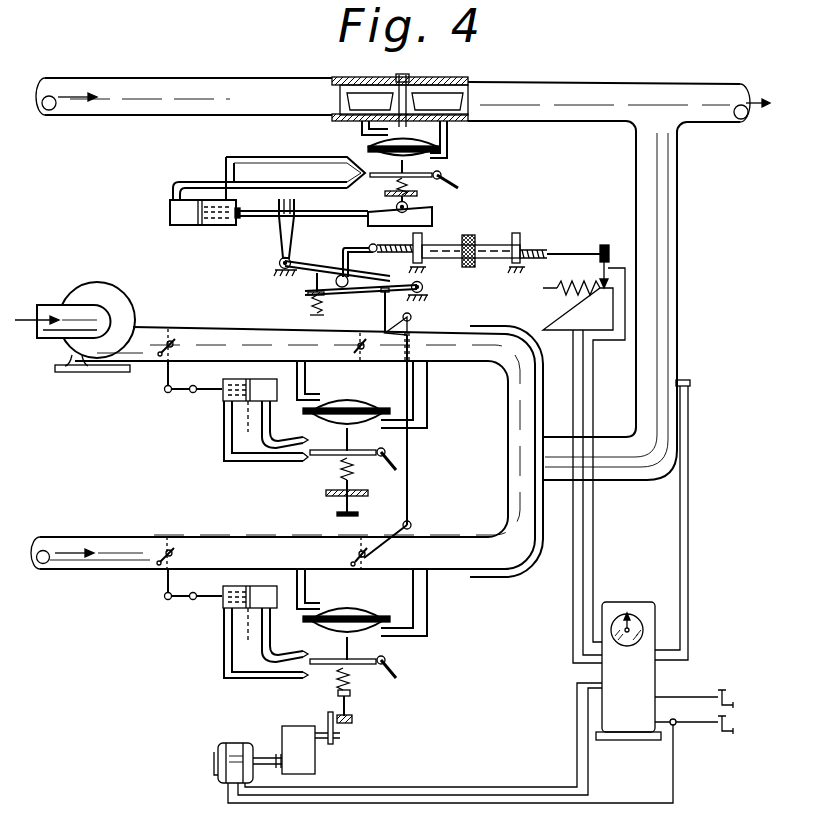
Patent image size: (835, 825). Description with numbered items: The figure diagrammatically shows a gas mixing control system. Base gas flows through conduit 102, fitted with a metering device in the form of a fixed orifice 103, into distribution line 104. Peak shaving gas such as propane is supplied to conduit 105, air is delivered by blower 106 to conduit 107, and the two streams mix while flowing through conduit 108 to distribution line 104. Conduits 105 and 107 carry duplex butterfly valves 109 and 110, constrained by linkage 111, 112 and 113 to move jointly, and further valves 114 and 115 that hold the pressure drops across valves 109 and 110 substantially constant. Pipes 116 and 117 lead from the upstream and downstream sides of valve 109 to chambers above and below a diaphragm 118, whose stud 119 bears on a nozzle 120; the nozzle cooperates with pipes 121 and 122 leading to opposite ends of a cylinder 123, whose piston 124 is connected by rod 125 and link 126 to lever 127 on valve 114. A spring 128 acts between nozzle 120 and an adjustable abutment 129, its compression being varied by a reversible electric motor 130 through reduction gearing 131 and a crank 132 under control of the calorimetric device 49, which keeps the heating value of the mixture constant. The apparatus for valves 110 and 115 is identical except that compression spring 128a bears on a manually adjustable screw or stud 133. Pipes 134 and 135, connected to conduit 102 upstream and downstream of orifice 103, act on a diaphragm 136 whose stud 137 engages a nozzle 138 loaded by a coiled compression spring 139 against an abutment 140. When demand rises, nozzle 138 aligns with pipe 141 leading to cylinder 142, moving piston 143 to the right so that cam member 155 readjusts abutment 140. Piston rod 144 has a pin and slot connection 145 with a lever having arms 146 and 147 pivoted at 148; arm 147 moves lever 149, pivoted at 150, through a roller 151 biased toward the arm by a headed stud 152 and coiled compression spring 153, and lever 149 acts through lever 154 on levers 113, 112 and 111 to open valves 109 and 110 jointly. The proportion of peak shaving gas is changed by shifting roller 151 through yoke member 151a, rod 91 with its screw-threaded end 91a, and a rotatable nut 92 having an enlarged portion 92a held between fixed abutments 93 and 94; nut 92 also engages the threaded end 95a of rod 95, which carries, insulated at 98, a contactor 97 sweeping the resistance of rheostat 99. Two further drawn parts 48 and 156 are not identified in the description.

The electrical lead 48 is at (690, 519).
The calorimetric device 49 is at (668, 671).
The rod 91 is at (380, 246).
The screw-threaded right-hand end 91a is at (420, 266).
The rotatable nut 92 is at (480, 262).
The enlarged portion 92a is at (472, 270).
The fixed abutment 93 is at (458, 265).
The fixed abutment 94 is at (550, 250).
The rod 95 is at (582, 252).
The threaded end 95a is at (562, 252).
The contactor 97 is at (613, 284).
The insulation 98 is at (612, 253).
The rheostat 99 is at (578, 472).
The conduit 102 is at (128, 76).
The fixed orifice 103 is at (425, 80).
The distribution line 104 is at (652, 88).
The conduit 105 is at (99, 536).
The blower 106 is at (80, 288).
The conduit 107 is at (137, 366).
The conduit 108 is at (683, 295).
The butterfly valve 109 is at (366, 570).
The butterfly valve 110 is at (362, 363).
The linkage lever 111 is at (411, 527).
The linkage lever 112 is at (410, 497).
The linkage lever 113 is at (412, 350).
The valve 114 is at (163, 545).
The valve 115 is at (168, 337).
The pipe 116 is at (302, 390).
The pipe 117 is at (429, 380).
The diaphragm 118 is at (386, 414).
The stud 119 is at (377, 452).
The nozzle 120 is at (398, 472).
The pipe 121 is at (224, 462).
The pipe 122 is at (263, 442).
The cylinder 123 is at (224, 400).
The piston 124 is at (228, 442).
The rod 125 is at (192, 394).
The link 126 is at (167, 396).
The lever 127 is at (140, 388).
The spring 128 is at (340, 680).
The compression spring 128a is at (345, 470).
The adjustable abutment 129 is at (350, 704).
The reversible electric motor 130 is at (218, 775).
The reduction gearing 131 is at (318, 766).
The crank 132 is at (336, 738).
The screw or stud 133 is at (340, 516).
The pipe 134 is at (368, 137).
The pipe 135 is at (452, 138).
The diaphragm 136 is at (310, 158).
The stud 137 is at (420, 164).
The nozzle 138 is at (440, 172).
The coiled compression spring 139 is at (458, 190).
The abutment 140 is at (430, 200).
The pipe 141 is at (180, 180).
The cylinder 142 is at (170, 212).
The piston 143 is at (200, 228).
The piston rod 144 is at (237, 216).
The pin and slot connection 145 is at (281, 218).
The arm 146 is at (278, 260).
The arm 147 is at (300, 295).
The fixed pivotal support 148 is at (280, 266).
The lever 149 is at (418, 294).
The fixed pivot 150 is at (412, 319).
The roller 151 is at (368, 225).
The yoke member 151a is at (343, 256).
The headed stud 152 is at (313, 316).
The coiled compression spring 153 is at (314, 298).
The lever 154 is at (299, 353).
The cam member 155 is at (434, 220).
The pivot 156 is at (480, 230).